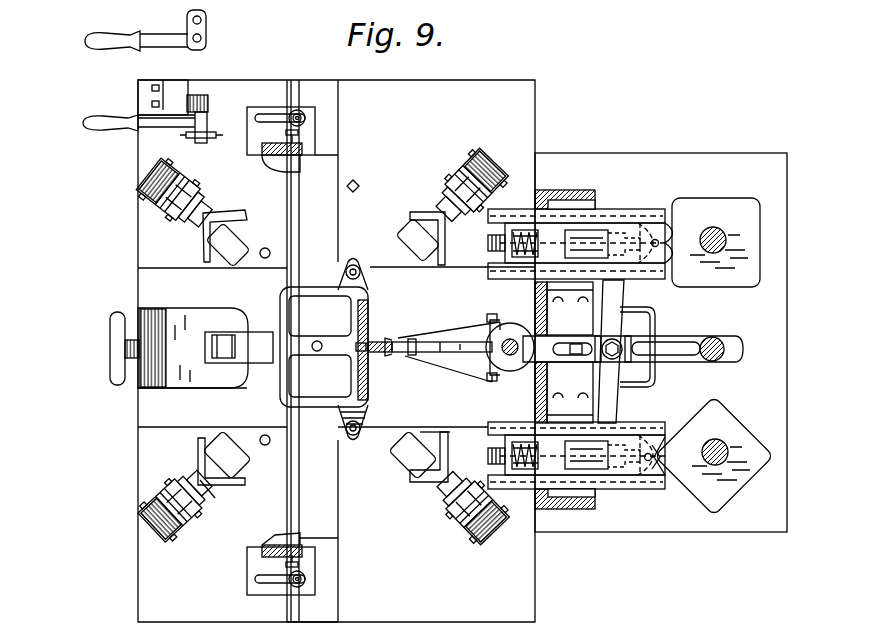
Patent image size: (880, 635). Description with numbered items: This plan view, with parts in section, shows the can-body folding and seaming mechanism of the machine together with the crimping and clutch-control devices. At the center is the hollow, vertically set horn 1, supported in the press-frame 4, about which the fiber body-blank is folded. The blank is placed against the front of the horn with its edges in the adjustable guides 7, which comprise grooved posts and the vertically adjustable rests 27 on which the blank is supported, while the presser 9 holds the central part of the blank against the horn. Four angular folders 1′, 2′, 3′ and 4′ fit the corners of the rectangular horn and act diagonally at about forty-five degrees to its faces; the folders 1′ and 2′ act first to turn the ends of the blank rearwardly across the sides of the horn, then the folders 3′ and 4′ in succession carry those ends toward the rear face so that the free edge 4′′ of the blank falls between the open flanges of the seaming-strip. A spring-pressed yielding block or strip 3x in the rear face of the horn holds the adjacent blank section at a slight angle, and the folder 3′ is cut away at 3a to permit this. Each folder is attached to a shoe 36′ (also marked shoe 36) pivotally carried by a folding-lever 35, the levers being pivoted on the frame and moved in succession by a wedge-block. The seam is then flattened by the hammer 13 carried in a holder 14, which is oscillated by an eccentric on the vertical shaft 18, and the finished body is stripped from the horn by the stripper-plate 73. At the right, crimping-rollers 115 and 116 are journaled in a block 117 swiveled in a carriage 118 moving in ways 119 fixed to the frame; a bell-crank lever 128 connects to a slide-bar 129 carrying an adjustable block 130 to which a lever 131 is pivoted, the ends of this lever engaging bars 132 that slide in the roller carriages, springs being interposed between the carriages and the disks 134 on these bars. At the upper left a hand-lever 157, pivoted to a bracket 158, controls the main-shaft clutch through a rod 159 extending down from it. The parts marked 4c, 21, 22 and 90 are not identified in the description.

The horn 1 is at (345, 318).
The angular folder 1′ is at (205, 450).
The angular folder 2′ is at (205, 245).
The angular folder 3′ is at (425, 492).
The cut-away portion of folder 3a is at (446, 440).
The yielding block or strip 3x is at (361, 330).
The press-frame 4 is at (195, 318).
The angular folder 4′ is at (430, 210).
The base plate portion 4c is at (192, 401).
The free edge of the blank 4′′ is at (312, 628).
The adjustable guides 7 is at (270, 152).
The presser 9 is at (193, 348).
The seaming-hammer 13 is at (400, 340).
The hammer holder 14 is at (450, 352).
The vertical shaft 18 is at (505, 340).
The guide bracket 21 is at (239, 347).
The knob 22 is at (140, 312).
The rests 27 is at (300, 532).
The folding-levers 35 is at (150, 178).
The shoe 36 is at (232, 216).
The shoes 36′ is at (230, 495).
The stripper-plate 73 is at (372, 335).
The contact box 90 is at (748, 200).
The crimping-roller 115 is at (658, 450).
The crimping-roller 116 is at (656, 460).
The block 117 is at (635, 222).
The carriage 118 is at (598, 228).
The ways 119 is at (540, 208).
The bell-crank lever 128 is at (577, 352).
The slide-bar 129 is at (700, 340).
The adjustable block 130 is at (645, 365).
The lever 131 is at (625, 342).
The bars 132 is at (503, 243).
The disks 134 is at (496, 236).
The hand-lever 157 is at (125, 50).
The bracket 158 is at (200, 95).
The rod 159 is at (208, 139).